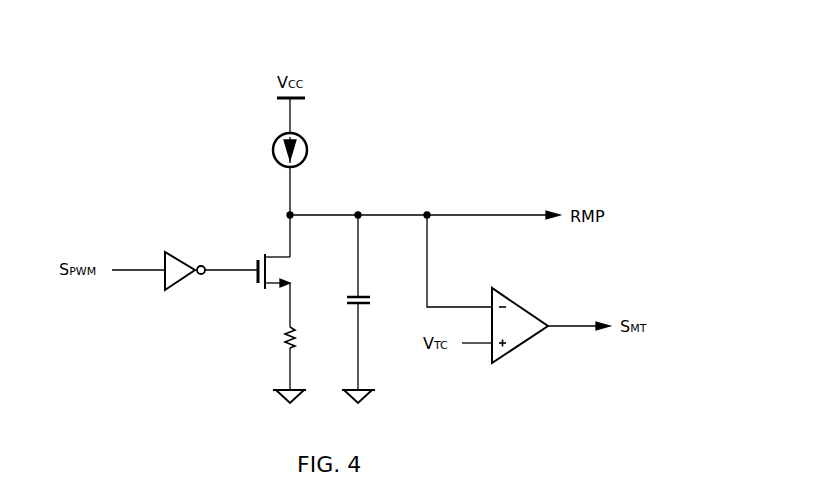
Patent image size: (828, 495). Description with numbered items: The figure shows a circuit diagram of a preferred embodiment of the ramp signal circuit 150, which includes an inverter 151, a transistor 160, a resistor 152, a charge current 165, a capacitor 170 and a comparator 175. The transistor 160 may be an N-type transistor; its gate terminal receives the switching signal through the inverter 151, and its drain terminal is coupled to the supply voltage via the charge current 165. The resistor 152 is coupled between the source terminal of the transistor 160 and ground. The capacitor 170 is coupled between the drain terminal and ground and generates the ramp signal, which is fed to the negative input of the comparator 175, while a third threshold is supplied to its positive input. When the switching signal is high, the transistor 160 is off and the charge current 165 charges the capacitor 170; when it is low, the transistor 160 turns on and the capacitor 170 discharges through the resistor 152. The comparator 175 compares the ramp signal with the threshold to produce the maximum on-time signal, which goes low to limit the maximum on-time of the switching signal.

The ramp signal circuit 150 is at (653, 103).
The inverter 151 is at (187, 261).
The resistor 152 is at (271, 338).
The transistor 160 is at (291, 290).
The charge current 165 is at (311, 150).
The capacitor 170 is at (378, 302).
The comparator 175 is at (523, 322).